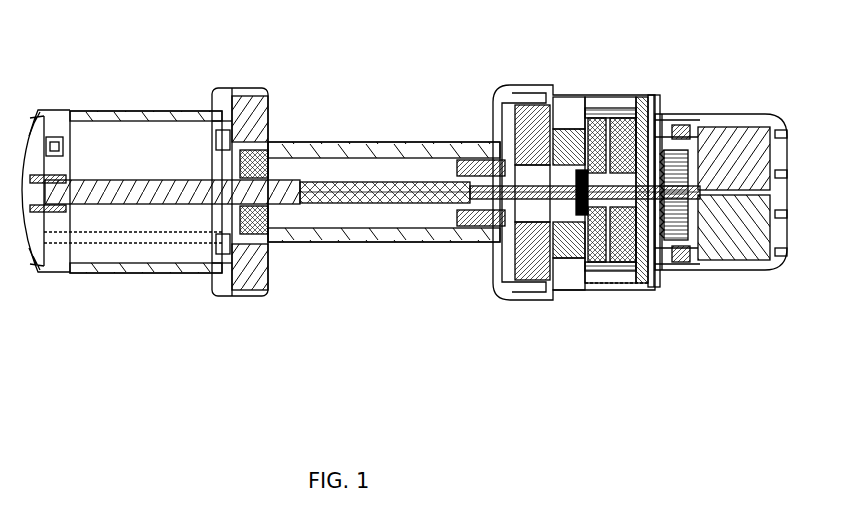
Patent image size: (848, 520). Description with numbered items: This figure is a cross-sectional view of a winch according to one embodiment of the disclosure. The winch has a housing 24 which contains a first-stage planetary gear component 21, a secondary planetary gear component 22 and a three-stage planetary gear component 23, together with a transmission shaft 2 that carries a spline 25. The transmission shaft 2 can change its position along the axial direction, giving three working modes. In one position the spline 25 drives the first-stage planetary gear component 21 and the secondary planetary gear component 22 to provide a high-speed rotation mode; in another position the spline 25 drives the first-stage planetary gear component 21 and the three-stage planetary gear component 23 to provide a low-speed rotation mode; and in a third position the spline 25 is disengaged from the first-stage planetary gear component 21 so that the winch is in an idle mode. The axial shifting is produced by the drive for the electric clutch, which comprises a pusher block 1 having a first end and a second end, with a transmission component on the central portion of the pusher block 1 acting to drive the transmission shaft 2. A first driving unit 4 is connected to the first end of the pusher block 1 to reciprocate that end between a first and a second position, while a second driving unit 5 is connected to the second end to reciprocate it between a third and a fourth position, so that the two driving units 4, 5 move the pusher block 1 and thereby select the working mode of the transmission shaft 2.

The pusher block 1 is at (690, 190).
The transmission shaft 2 is at (655, 258).
The first driving unit 4 is at (745, 115).
The second driving unit 5 is at (725, 243).
The first-stage planetary gear component 21 is at (536, 100).
The secondary planetary gear component 22 is at (604, 112).
The three-stage planetary gear component 23 is at (638, 112).
The housing 24 is at (684, 106).
The spline 25 is at (585, 110).